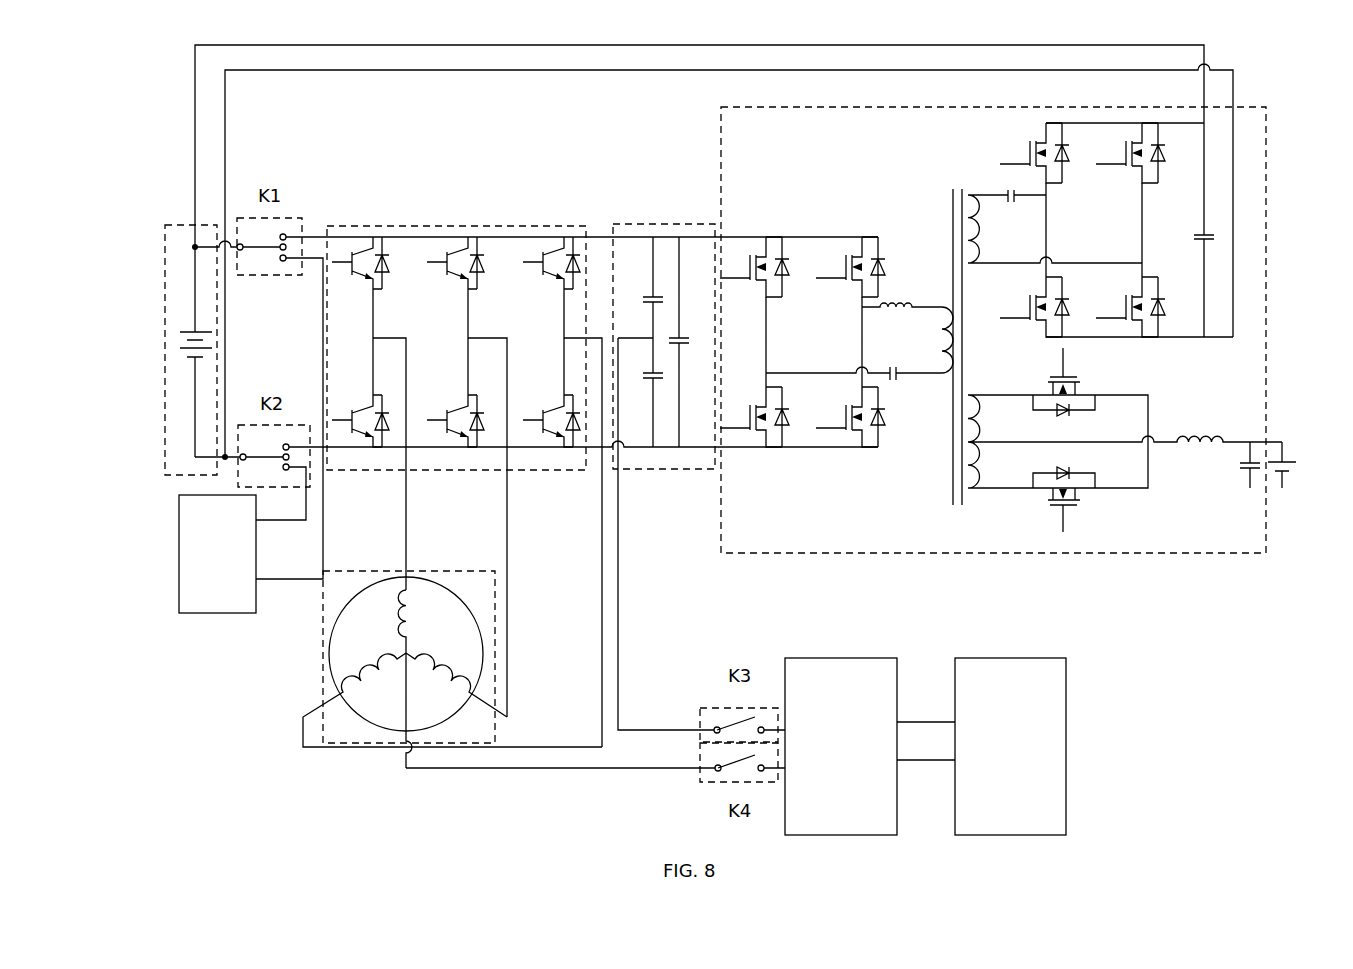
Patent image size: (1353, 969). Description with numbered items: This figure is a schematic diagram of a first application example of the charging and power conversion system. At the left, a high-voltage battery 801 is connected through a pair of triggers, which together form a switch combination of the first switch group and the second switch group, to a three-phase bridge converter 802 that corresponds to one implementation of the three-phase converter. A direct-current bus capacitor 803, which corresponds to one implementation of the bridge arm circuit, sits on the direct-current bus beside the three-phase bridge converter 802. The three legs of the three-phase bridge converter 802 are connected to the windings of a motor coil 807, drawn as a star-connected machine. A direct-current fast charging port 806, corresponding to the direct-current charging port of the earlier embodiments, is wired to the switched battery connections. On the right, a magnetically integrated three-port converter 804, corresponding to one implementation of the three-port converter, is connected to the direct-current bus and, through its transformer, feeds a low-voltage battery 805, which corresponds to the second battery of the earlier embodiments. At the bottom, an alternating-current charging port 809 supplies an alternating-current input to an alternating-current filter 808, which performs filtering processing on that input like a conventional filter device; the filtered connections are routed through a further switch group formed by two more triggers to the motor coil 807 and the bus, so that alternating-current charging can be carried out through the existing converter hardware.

The high-voltage battery 801 is at (180, 312).
The three-phase bridge converter 802 is at (422, 232).
The direct-current bus capacitor 803 is at (638, 228).
The magnetically integrated three-port converter 804 is at (1210, 370).
The low-voltage battery 805 is at (1283, 455).
The direct-current fast charging port 806 is at (217, 554).
The motor coil 807 is at (327, 605).
The alternating-current filter 808 is at (841, 746).
The alternating-current charging port 809 is at (1010, 746).